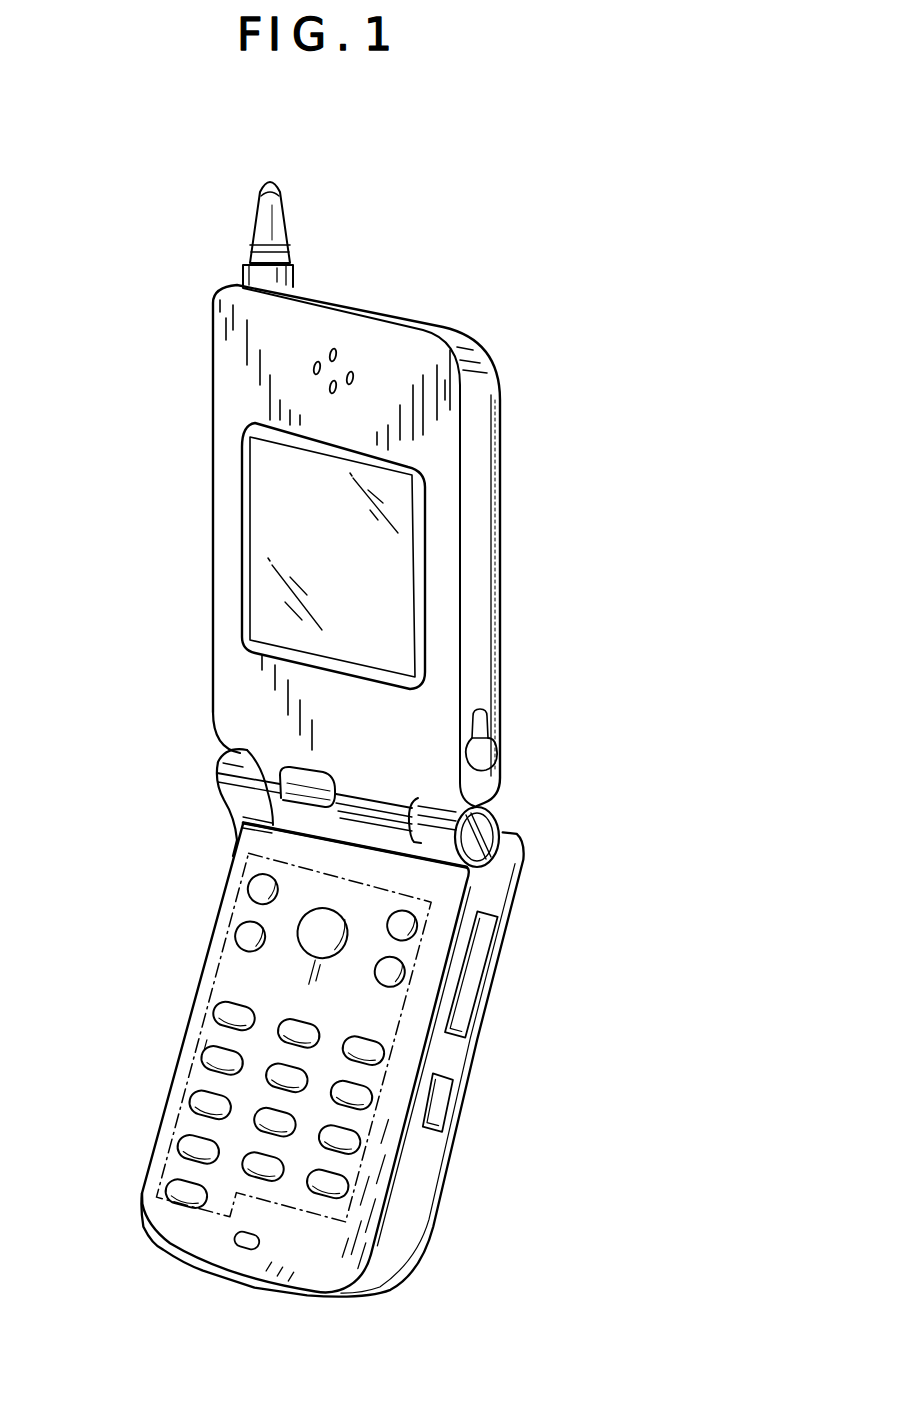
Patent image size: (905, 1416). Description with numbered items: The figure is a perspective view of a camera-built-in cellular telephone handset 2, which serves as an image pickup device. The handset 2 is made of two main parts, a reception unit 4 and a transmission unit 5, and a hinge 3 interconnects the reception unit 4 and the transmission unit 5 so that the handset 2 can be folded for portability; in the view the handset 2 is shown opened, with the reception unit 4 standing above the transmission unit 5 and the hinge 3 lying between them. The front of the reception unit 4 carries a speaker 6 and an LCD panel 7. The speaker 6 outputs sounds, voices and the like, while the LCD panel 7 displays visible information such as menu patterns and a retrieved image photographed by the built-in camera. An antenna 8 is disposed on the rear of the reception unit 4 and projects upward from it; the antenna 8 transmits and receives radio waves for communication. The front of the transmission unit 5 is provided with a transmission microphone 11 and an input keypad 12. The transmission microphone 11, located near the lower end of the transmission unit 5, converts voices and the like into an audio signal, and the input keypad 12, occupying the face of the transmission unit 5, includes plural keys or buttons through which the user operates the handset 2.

The camera-built-in cellular telephone handset 2 is at (128, 211).
The hinge 3 is at (505, 818).
The reception unit 4 is at (200, 483).
The transmission unit 5 is at (151, 1108).
The speaker 6 is at (343, 371).
The LCD panel 7 is at (397, 568).
The antenna 8 is at (273, 217).
The transmission microphone 11 is at (244, 1249).
The input keypad 12 is at (210, 990).